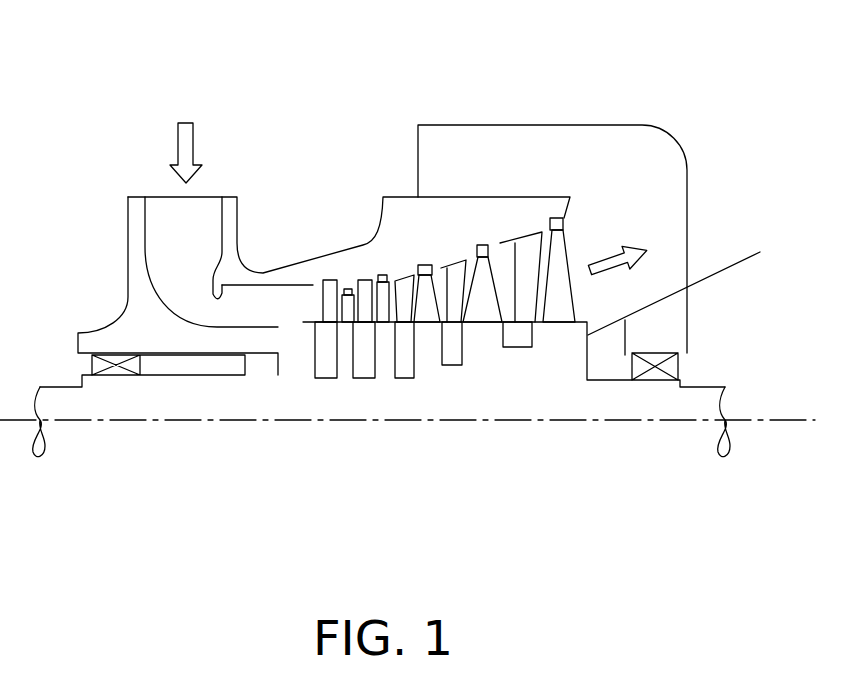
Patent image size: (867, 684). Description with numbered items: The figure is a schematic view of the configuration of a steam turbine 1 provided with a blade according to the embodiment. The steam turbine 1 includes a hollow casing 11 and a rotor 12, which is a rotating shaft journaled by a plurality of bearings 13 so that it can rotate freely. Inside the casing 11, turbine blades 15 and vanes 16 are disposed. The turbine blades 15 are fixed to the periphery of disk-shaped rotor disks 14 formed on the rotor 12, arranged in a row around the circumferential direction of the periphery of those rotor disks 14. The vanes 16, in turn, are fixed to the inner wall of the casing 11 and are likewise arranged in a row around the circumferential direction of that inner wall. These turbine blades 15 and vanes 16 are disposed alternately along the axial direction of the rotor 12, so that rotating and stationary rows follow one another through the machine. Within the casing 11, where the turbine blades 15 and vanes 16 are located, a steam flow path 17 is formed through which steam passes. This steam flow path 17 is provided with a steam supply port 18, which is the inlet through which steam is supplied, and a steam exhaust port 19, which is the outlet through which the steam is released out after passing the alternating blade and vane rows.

The steam turbine 1 is at (347, 128).
The hollow casing 11 is at (138, 307).
The rotor 12 is at (350, 405).
The bearings 13 is at (113, 373).
The rotor disks 14 is at (345, 345).
The turbine blades 15 is at (348, 290).
The vanes 16 is at (333, 292).
The steam flow path 17 is at (282, 295).
The steam supply port 18 is at (160, 207).
The steam exhaust port 19 is at (675, 238).